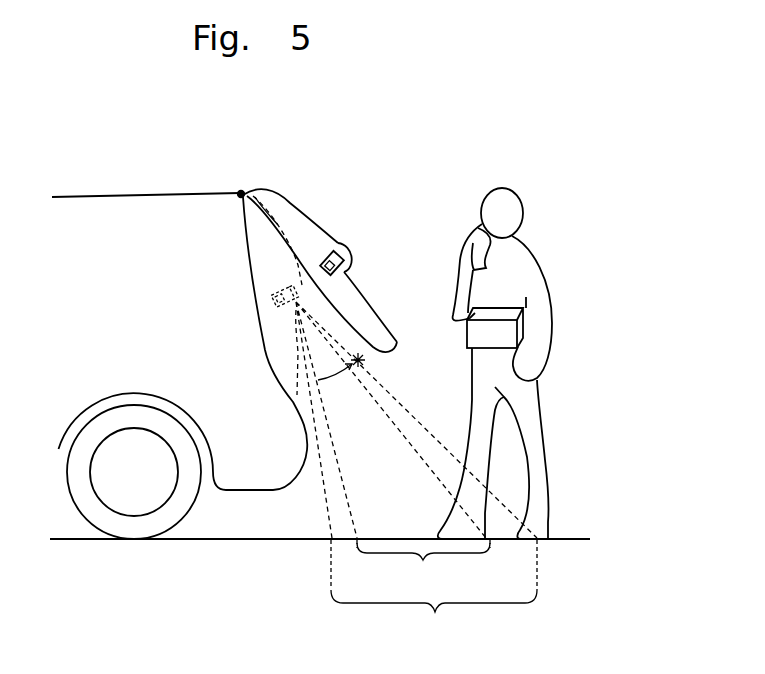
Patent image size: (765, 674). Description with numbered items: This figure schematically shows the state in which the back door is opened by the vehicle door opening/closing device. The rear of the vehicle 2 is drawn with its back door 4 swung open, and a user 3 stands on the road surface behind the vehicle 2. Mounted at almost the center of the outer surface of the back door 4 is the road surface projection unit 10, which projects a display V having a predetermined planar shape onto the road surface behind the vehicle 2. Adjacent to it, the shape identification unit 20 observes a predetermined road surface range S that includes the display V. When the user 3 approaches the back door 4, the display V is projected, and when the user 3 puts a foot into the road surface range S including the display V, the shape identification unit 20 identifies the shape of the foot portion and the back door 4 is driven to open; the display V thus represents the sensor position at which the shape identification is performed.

The vehicle 2 is at (184, 216).
The user 3 is at (532, 270).
The vehicle door 4 is at (283, 202).
The road surface projection unit 10 is at (346, 268).
The shape identification unit 20 is at (347, 246).
The display V is at (423, 568).
The predetermined road surface range S is at (434, 595).